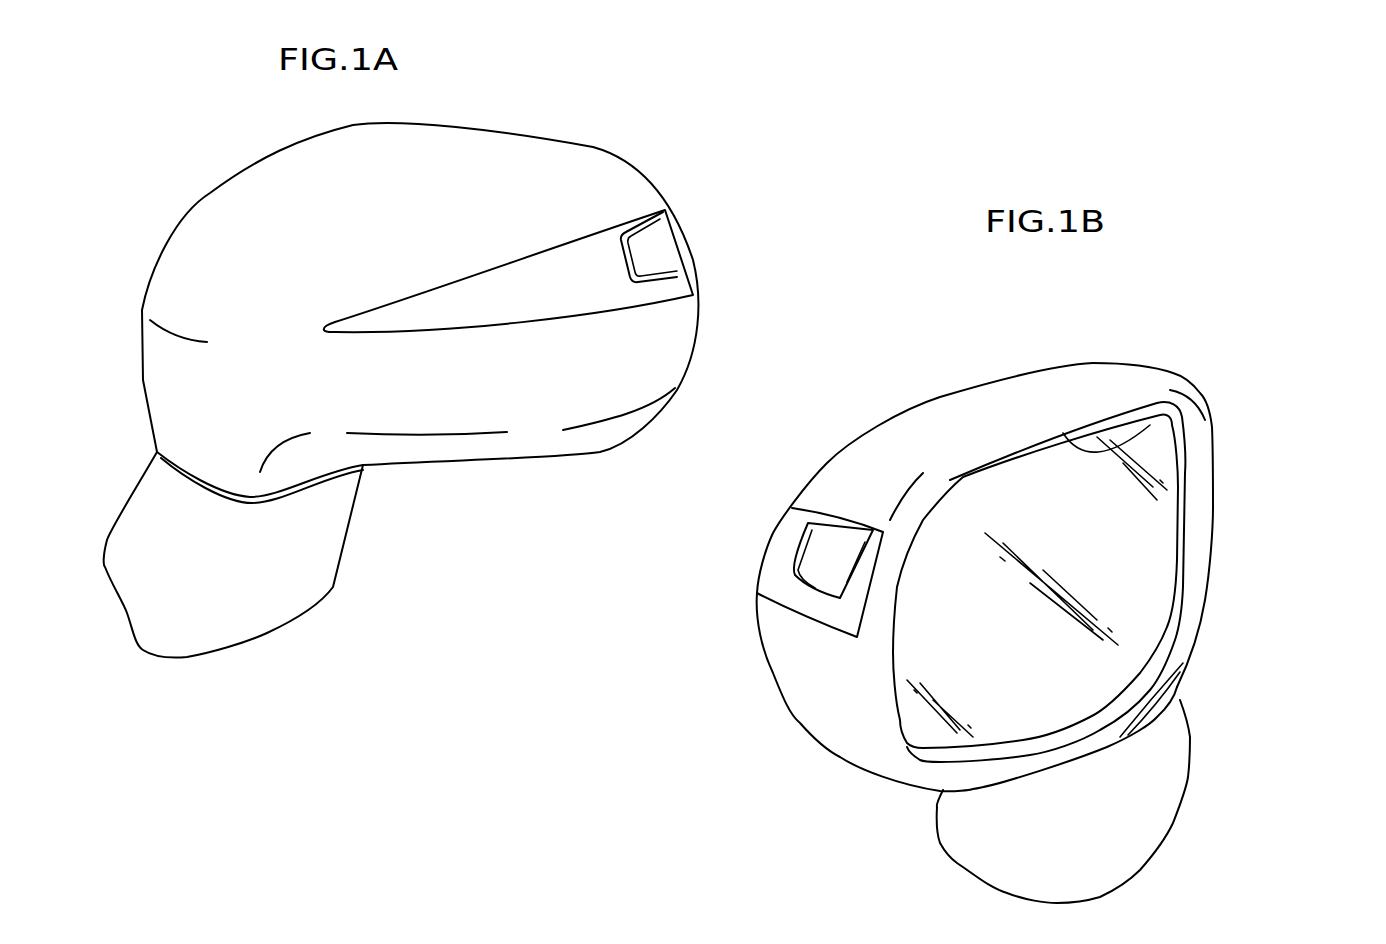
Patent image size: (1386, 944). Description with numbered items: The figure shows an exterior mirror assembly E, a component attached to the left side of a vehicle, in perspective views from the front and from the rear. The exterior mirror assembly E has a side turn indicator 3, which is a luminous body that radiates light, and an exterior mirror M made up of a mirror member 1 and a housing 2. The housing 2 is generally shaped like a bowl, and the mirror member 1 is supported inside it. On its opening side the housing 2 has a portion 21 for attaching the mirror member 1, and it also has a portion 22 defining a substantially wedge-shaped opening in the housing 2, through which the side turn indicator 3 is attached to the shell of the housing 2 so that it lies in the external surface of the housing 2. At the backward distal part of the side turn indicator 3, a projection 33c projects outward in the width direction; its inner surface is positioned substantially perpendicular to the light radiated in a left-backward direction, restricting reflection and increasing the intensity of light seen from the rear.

In FIG. 1B, the mirror member 1 is at (927, 547).
In FIG. 1A, the housing 2 is at (613, 193).
In FIG. 1B, the housing 2 is at (903, 440).
In FIG. 1A, the side turn indicator 3 is at (682, 288).
In FIG. 1B, the side turn indicator 3 is at (773, 590).
In FIG. 1B, the portion for attaching the mirror member 21 is at (1167, 395).
In FIG. 1B, the portion defining a wedge-shaped opening 22 is at (790, 508).
In FIG. 1A, the projection 33c is at (653, 237).
In FIG. 1B, the projection 33c is at (810, 550).
In FIG. 1A, the exterior mirror assembly E is at (593, 123).
In FIG. 1B, the exterior mirror assembly E is at (1242, 500).
In FIG. 1B, the exterior mirror M is at (1083, 262).